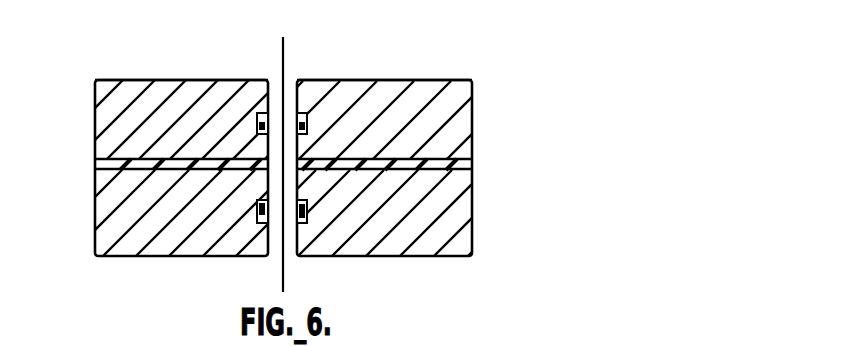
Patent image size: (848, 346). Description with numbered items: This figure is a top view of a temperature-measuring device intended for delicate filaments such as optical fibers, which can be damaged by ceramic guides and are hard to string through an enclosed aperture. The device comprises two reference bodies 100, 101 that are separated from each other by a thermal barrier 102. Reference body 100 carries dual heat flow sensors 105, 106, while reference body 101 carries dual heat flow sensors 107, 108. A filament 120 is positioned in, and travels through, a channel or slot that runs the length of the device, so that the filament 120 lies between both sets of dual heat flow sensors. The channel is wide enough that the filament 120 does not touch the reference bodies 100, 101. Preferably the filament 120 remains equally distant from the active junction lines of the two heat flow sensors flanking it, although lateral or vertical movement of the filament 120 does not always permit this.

The reference body 100 is at (135, 233).
The reference body 101 is at (108, 133).
The thermal barrier 102 is at (97, 163).
The heat flow sensor 105 is at (261, 242).
The heat flow sensor 106 is at (304, 221).
The heat flow sensor 107 is at (257, 113).
The heat flow sensor 108 is at (306, 120).
The filament 120 is at (284, 46).